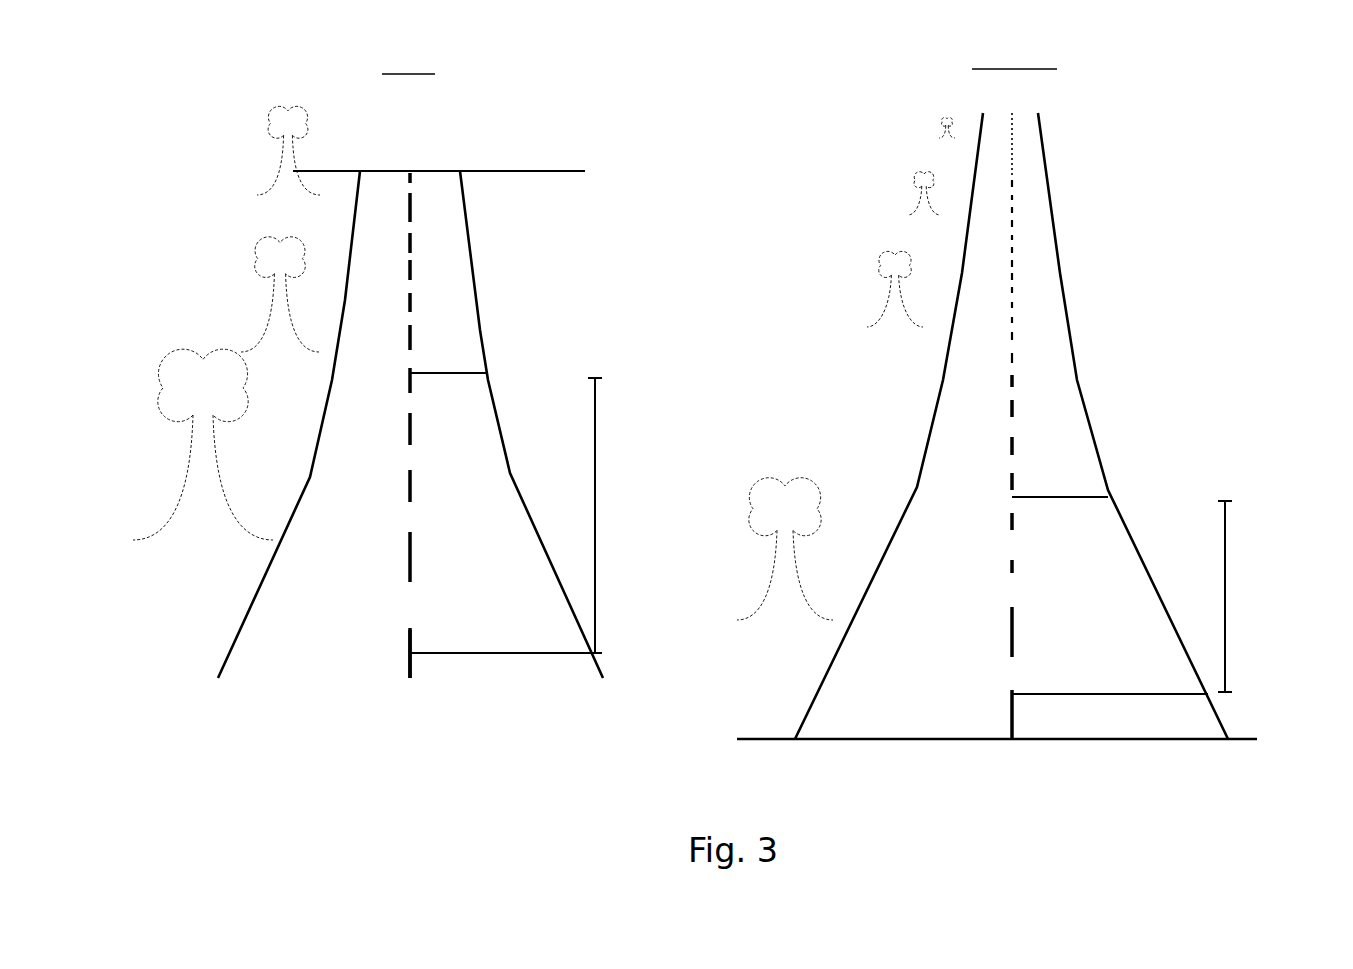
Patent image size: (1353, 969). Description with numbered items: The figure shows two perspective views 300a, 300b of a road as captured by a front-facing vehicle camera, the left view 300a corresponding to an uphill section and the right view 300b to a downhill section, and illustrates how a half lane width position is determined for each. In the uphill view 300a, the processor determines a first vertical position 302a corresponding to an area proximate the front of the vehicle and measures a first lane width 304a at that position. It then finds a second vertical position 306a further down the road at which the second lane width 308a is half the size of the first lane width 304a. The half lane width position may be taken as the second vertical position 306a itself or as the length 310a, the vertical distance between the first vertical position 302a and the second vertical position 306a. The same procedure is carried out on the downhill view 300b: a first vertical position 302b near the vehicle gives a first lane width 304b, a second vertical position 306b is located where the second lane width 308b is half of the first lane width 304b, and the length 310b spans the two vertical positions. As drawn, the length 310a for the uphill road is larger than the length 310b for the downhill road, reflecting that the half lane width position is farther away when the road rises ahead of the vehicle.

The perspective view (uphill) 300a is at (293, 86).
The perspective view (downhill) 300b is at (900, 84).
The first vertical position 302a is at (408, 675).
The first vertical position 302b is at (1010, 706).
The first lane width 304a is at (580, 632).
The first lane width 304b is at (1207, 674).
The second vertical position 306a is at (410, 392).
The second vertical position 306b is at (1015, 500).
The second lane width 308a is at (490, 372).
The second lane width 308b is at (1110, 478).
The length (vertical distance) 310a is at (610, 377).
The length (vertical distance) 310b is at (1240, 500).